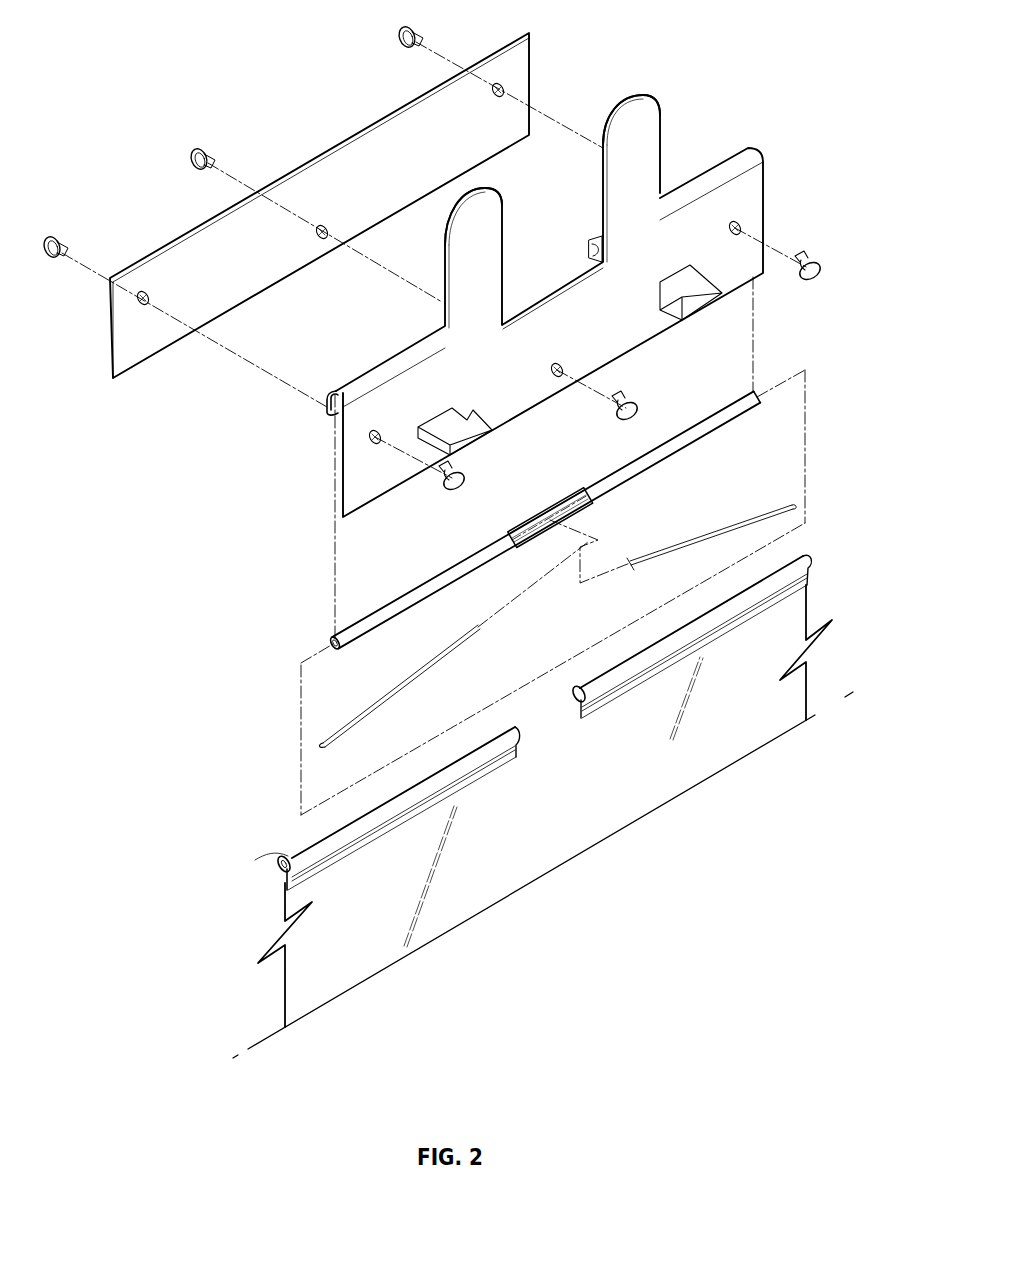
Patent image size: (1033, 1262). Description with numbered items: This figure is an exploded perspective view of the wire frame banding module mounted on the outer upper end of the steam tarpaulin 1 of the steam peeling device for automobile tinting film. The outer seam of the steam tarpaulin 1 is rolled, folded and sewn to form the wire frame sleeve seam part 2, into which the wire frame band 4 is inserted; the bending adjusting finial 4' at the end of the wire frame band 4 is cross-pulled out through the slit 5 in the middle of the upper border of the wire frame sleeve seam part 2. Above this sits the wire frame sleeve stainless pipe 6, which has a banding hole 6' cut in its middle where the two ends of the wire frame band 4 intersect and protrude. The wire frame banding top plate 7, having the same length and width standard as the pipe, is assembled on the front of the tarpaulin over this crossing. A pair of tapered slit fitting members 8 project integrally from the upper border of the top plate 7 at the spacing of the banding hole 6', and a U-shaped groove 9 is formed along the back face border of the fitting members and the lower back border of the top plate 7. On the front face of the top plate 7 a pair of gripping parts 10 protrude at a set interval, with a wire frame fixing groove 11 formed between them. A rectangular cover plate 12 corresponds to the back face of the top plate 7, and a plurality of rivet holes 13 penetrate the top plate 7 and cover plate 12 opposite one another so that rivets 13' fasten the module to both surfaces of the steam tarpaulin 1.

The steam tarpaulin 1 is at (333, 940).
The wire frame sleeve seam part 2 is at (300, 852).
The wire frame band 4 is at (506, 626).
The bending adjusting finial 4' is at (264, 773).
The slit 5 is at (482, 733).
The wire frame sleeve stainless pipe 6 is at (496, 546).
The banding hole 6' is at (550, 509).
The wire frame banding top plate 7 is at (365, 478).
The tapered slit fitting member 8 is at (651, 82).
The U-shaped groove 9 is at (327, 406).
The gripping part 10 is at (690, 298).
The wire frame fixing groove 11 is at (745, 236).
The cover plate 12 is at (340, 160).
The rivet hole 13 is at (194, 350).
The rivet 13' is at (232, 142).